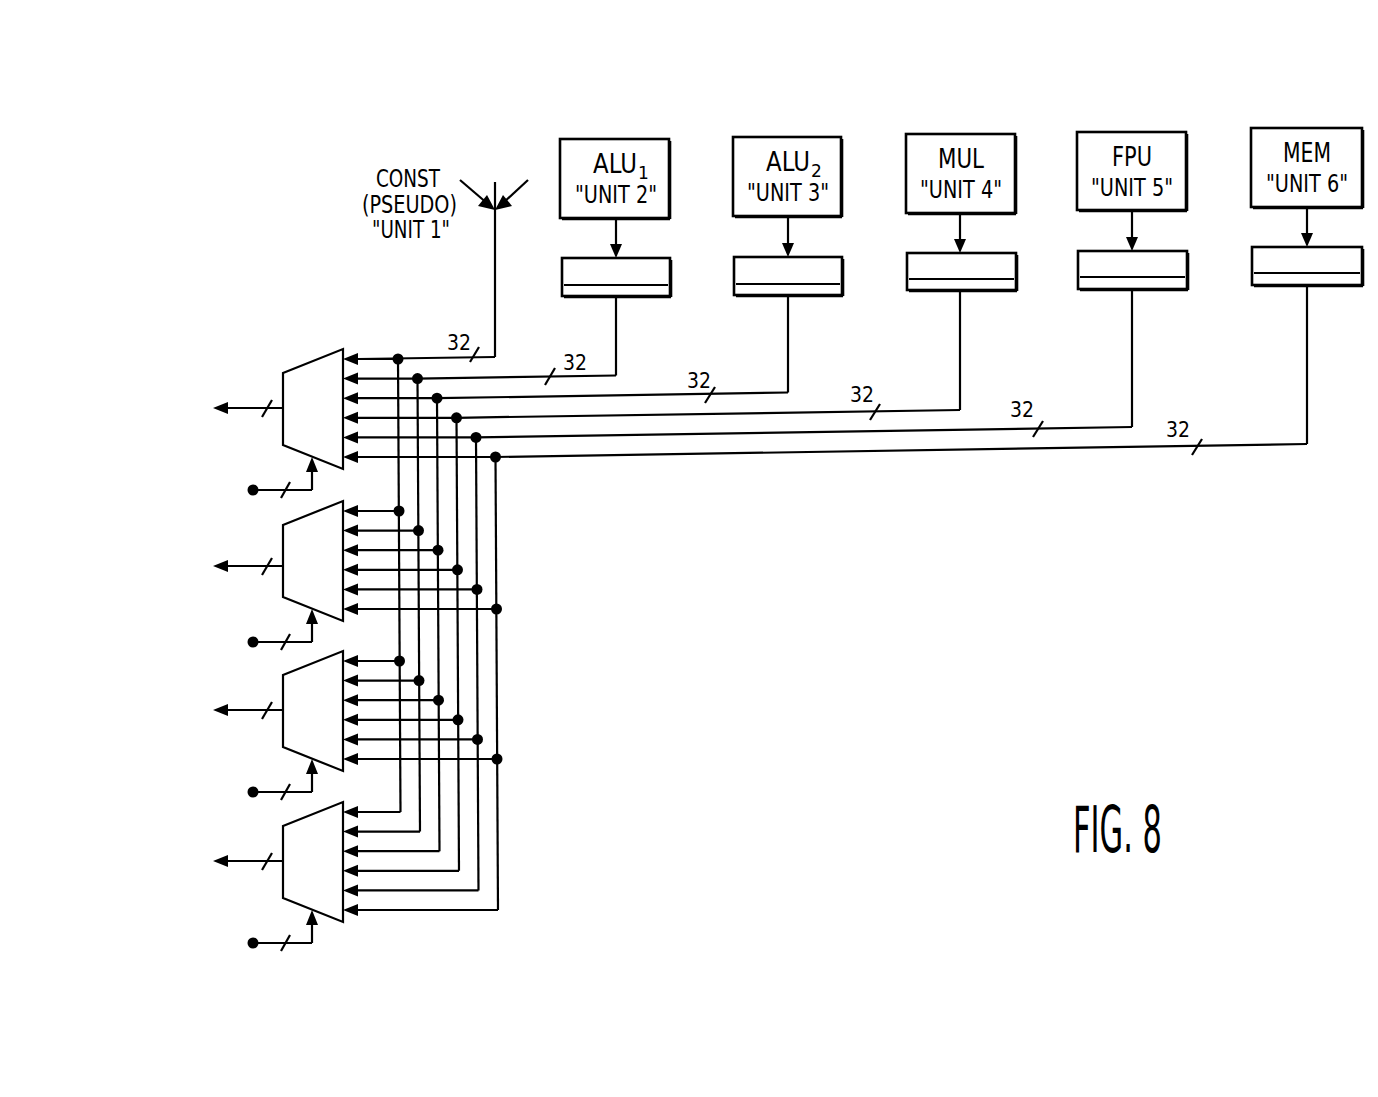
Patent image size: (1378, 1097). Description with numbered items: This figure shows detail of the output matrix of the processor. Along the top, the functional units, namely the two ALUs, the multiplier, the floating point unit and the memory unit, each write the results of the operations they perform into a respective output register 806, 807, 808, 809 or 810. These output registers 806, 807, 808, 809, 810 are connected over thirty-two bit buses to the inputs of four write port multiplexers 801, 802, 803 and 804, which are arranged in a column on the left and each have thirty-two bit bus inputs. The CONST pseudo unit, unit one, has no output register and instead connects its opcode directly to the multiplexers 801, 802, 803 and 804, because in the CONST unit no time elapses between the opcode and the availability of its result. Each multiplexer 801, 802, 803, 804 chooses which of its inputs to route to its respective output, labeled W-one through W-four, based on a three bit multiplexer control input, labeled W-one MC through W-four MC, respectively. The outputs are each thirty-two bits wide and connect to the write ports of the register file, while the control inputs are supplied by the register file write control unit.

The write port multiplexer 801 is at (300, 366).
The write port multiplexer 802 is at (284, 528).
The write port multiplexer 803 is at (283, 722).
The write port multiplexer 804 is at (282, 884).
The output register 806 is at (637, 297).
The output register 807 is at (809, 296).
The output register 808 is at (980, 291).
The output register 809 is at (1151, 290).
The output register 810 is at (1318, 286).